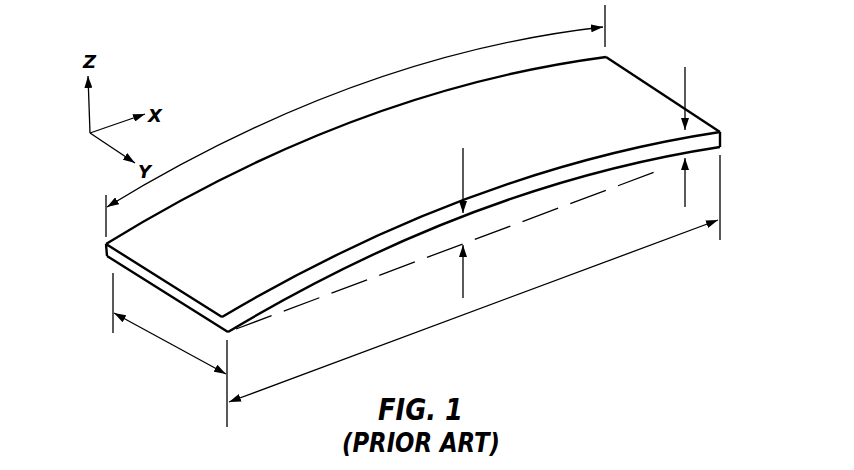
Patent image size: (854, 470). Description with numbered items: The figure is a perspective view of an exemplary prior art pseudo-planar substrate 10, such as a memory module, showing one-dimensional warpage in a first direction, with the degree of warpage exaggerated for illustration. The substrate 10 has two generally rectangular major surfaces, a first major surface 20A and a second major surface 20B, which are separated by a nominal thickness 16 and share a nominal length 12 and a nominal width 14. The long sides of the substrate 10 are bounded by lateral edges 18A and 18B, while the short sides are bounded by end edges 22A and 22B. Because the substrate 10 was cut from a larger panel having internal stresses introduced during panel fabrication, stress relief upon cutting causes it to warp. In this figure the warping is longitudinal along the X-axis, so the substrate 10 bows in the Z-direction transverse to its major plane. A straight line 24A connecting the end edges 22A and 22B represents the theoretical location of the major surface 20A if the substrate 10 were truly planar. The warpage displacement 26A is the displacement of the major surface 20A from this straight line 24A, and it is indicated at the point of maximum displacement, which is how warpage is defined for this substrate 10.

The pseudo-planar substrate 10 is at (428, 182).
The nominal length 12 is at (313, 106).
The nominal width 14 is at (163, 343).
The nominal thickness 16 is at (686, 84).
The lateral edge 18A is at (574, 170).
The lateral edge 18B is at (378, 112).
The first major surface 20A is at (483, 209).
The second major surface 20B is at (602, 92).
The end edge 22A is at (140, 279).
The end edge 22B is at (721, 134).
The straight line 24A is at (617, 186).
The warpage displacement 26A is at (462, 272).